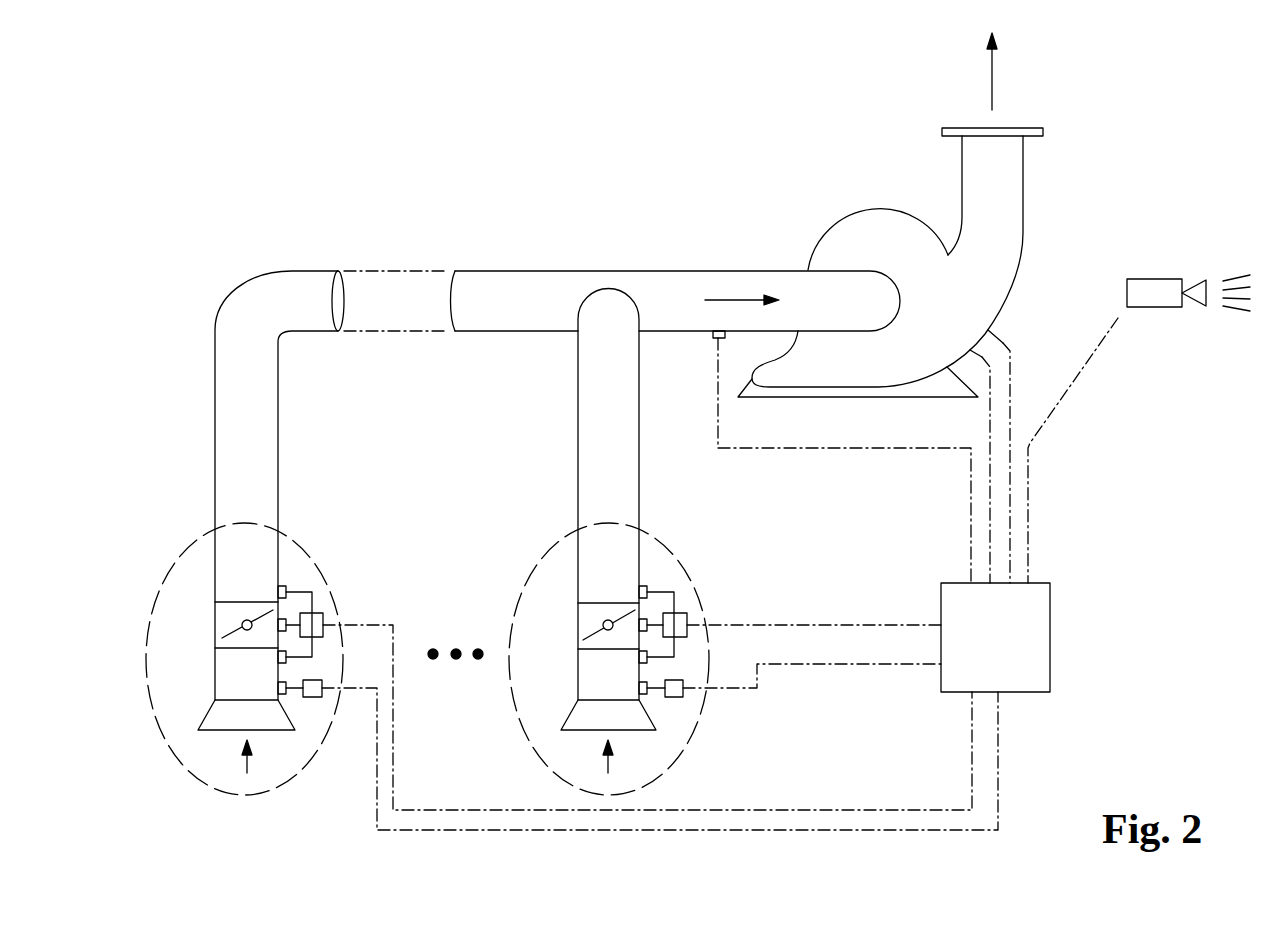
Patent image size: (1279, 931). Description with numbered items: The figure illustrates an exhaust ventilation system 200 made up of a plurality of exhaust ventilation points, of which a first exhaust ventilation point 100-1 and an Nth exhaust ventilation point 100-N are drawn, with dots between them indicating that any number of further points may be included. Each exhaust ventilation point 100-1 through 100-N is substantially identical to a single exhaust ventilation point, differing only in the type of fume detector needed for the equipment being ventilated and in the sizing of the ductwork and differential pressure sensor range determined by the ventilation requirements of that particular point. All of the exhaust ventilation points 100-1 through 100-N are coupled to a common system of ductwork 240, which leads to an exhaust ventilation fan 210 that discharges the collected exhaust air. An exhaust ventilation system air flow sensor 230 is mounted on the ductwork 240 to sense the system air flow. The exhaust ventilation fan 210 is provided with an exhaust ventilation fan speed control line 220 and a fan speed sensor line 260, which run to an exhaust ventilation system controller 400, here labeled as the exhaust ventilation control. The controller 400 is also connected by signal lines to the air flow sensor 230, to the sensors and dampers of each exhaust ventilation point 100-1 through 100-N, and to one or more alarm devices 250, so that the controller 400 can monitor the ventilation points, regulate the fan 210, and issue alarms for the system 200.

The exhaust ventilation system 200 is at (403, 143).
The exhaust ventilation point 100-1 is at (188, 547).
The exhaust ventilation point 100-N is at (548, 550).
The system of ductwork 240 is at (530, 271).
The exhaust ventilation fan 210 is at (830, 237).
The exhaust ventilation system air flow sensor 230 is at (713, 337).
The exhaust ventilation fan speed control line 220 is at (1010, 351).
The fan speed sensor line 260 is at (990, 375).
The alarm device 250 is at (1167, 279).
The exhaust ventilation system controller 400 is at (1050, 596).